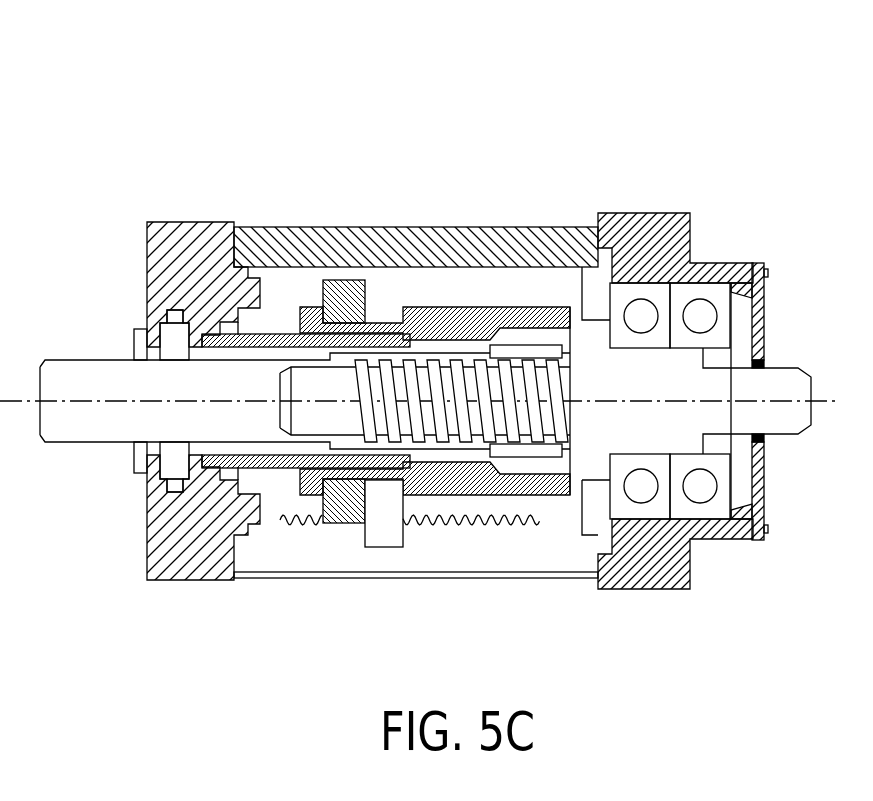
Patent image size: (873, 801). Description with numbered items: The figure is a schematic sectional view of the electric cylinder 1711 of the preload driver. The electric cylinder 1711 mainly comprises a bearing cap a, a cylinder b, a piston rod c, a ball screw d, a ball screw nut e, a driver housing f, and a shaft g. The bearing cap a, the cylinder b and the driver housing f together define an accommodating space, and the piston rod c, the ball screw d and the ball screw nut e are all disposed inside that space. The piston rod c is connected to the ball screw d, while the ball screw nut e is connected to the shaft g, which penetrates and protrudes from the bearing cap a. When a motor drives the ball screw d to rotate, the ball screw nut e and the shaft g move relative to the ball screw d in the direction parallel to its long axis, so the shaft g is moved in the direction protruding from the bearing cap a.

The electric cylinder 1711 is at (238, 53).
The bearing cap a is at (192, 255).
The cylinder b is at (468, 250).
The piston rod c is at (305, 388).
The ball screw d is at (388, 360).
The ball screw nut e is at (525, 340).
The driver housing f is at (660, 245).
The shaft g is at (92, 380).